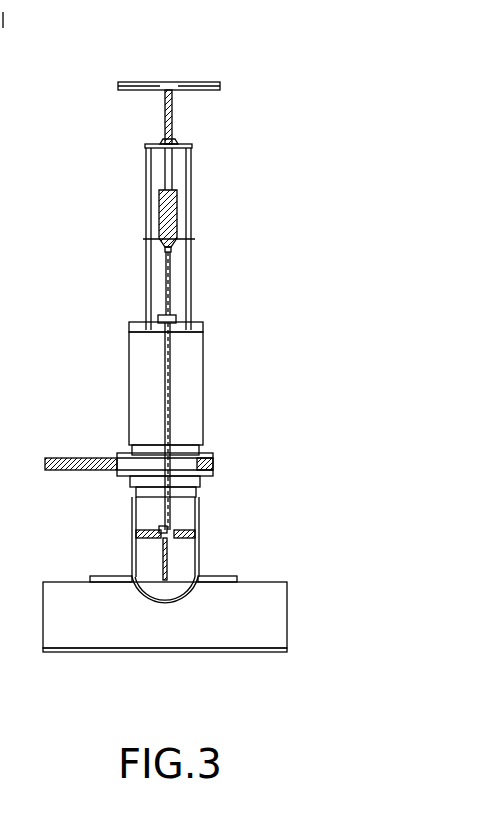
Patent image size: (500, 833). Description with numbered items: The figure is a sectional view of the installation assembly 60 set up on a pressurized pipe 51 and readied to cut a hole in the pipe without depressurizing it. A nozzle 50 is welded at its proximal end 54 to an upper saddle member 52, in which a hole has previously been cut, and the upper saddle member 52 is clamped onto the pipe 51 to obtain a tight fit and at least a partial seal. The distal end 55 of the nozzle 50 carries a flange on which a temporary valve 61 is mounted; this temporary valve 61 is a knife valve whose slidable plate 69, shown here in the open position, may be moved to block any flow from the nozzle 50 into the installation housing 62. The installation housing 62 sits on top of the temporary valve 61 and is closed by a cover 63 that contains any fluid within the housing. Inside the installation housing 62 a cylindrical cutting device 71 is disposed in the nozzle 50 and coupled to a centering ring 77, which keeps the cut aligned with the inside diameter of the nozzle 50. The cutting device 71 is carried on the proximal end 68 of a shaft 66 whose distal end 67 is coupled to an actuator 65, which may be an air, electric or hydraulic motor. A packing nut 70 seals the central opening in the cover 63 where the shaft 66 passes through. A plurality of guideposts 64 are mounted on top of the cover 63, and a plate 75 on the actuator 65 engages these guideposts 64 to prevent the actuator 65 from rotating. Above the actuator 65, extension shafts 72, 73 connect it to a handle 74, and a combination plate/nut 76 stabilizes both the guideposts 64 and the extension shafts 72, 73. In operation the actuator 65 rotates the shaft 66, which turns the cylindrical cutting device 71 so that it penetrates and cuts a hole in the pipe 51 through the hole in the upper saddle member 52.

The nozzle 50 is at (203, 550).
The pressurized pipe 51 is at (57, 650).
The upper saddle member 52 is at (113, 582).
The proximal end of the nozzle 54 is at (165, 603).
The distal end of the nozzle 55 is at (197, 483).
The installation assembly 60 is at (265, 160).
The temporary valve 61 is at (110, 448).
The installation housing 62 is at (203, 382).
The cover 63 is at (196, 322).
The guideposts 64 is at (190, 165).
The actuator 65 is at (160, 218).
The shaft 66 is at (163, 368).
The distal end of the shaft 67 is at (180, 253).
The proximal end of the shaft 68 is at (159, 530).
The slidable plate 69 is at (90, 470).
The packing nut 70 is at (182, 315).
The cylindrical cutting device 71 is at (143, 567).
The extension shaft 72 is at (165, 168).
The extension shaft 73 is at (164, 115).
The handle 74 is at (200, 82).
The plate 75 is at (181, 233).
The combination plate/nut 76 is at (172, 143).
The centering ring 77 is at (195, 533).